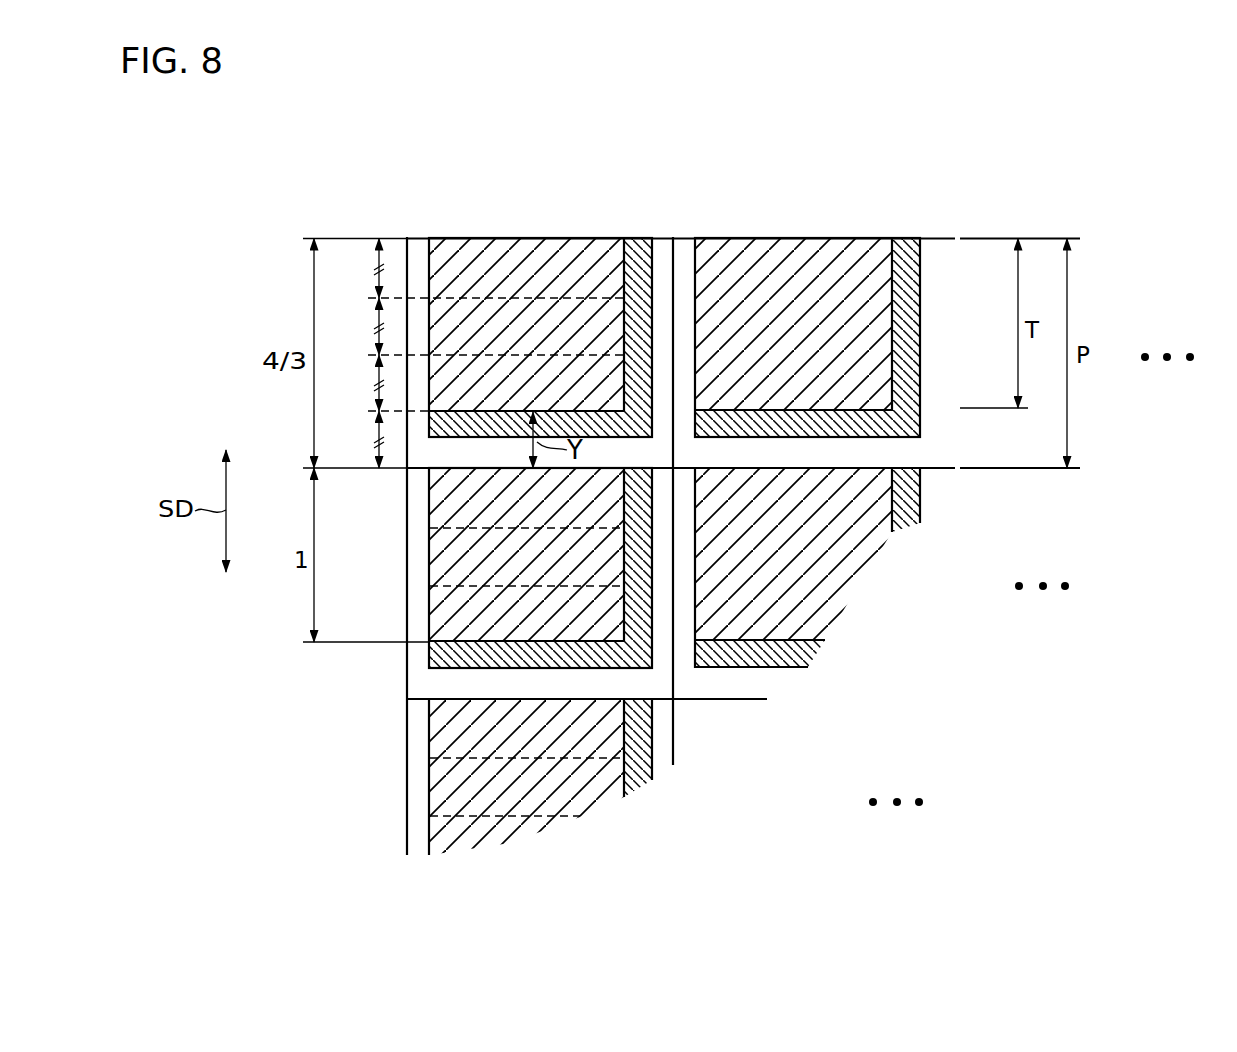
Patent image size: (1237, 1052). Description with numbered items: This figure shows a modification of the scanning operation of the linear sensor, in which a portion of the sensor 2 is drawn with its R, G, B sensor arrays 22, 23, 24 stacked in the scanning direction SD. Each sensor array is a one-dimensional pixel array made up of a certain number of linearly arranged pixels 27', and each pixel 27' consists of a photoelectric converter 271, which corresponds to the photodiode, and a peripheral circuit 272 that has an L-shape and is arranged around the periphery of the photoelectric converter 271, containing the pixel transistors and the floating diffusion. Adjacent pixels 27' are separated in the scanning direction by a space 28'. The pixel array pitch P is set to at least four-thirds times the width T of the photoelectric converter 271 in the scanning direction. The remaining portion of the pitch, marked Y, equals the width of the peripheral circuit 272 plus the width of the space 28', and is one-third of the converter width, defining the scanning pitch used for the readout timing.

The electro-optical device 2 is at (867, 137).
The R sensor array 22 is at (1125, 288).
The G sensor array 23 is at (1125, 545).
The B sensor array 24 is at (1125, 767).
The pixel 27' is at (570, 262).
The photoelectric converter 271 is at (533, 267).
The peripheral circuit 272 is at (637, 264).
The space 28' is at (691, 522).